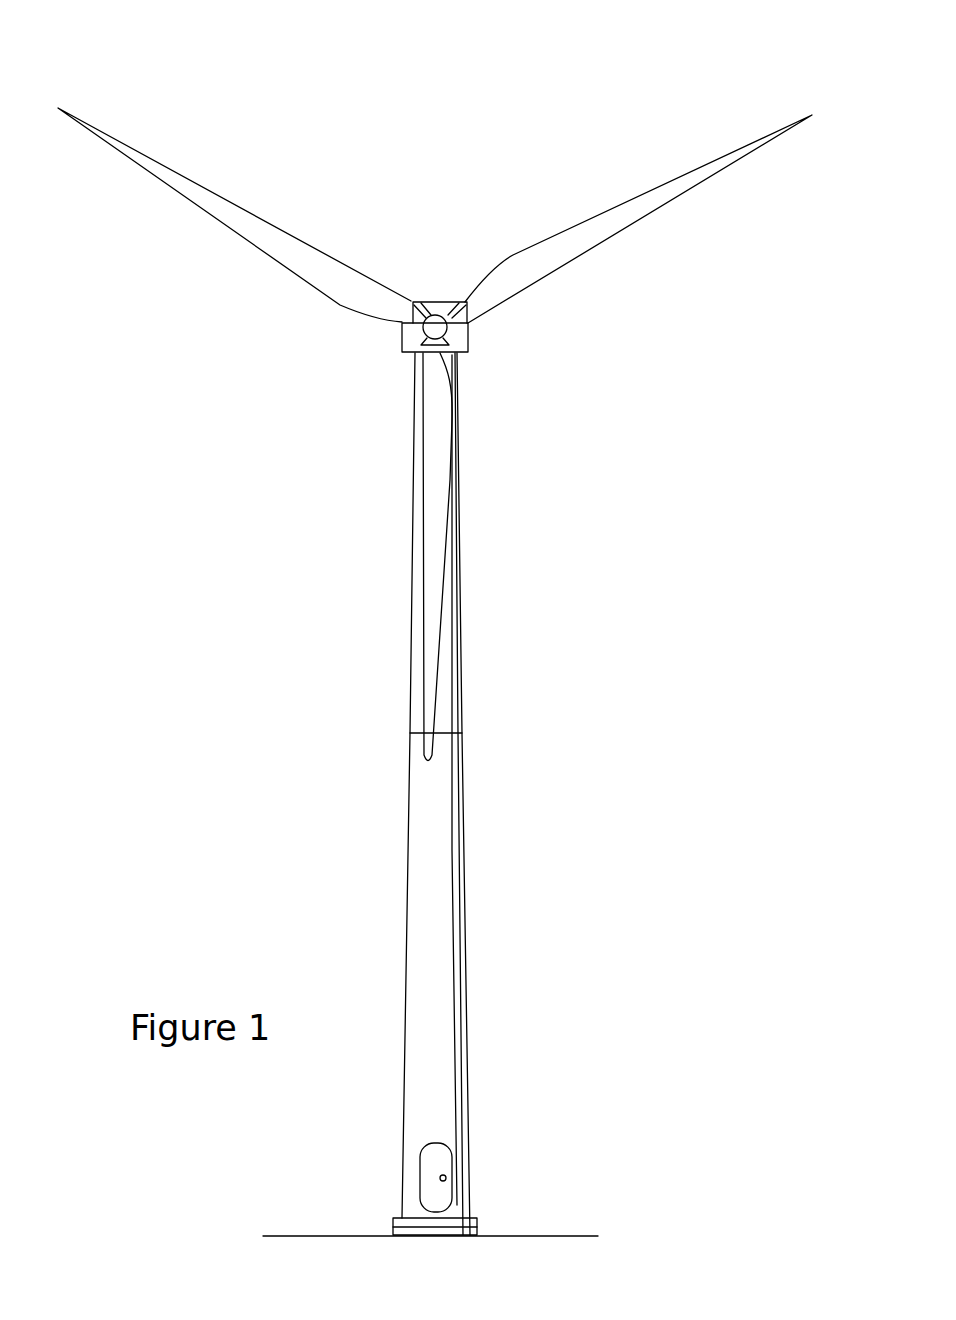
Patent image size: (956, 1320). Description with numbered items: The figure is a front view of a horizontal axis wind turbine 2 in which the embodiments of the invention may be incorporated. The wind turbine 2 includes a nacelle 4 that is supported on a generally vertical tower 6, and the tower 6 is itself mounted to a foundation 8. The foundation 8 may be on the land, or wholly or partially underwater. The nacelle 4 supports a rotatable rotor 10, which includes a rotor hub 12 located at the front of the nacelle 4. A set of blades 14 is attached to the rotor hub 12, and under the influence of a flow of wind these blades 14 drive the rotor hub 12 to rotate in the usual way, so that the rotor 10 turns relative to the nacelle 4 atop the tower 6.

The wind turbine 2 is at (694, 89).
The nacelle 4 is at (462, 342).
The tower 6 is at (437, 853).
The foundation 8 is at (555, 1232).
The rotor 10 is at (443, 273).
The rotor hub 12 is at (430, 330).
The blades 14 is at (232, 213).